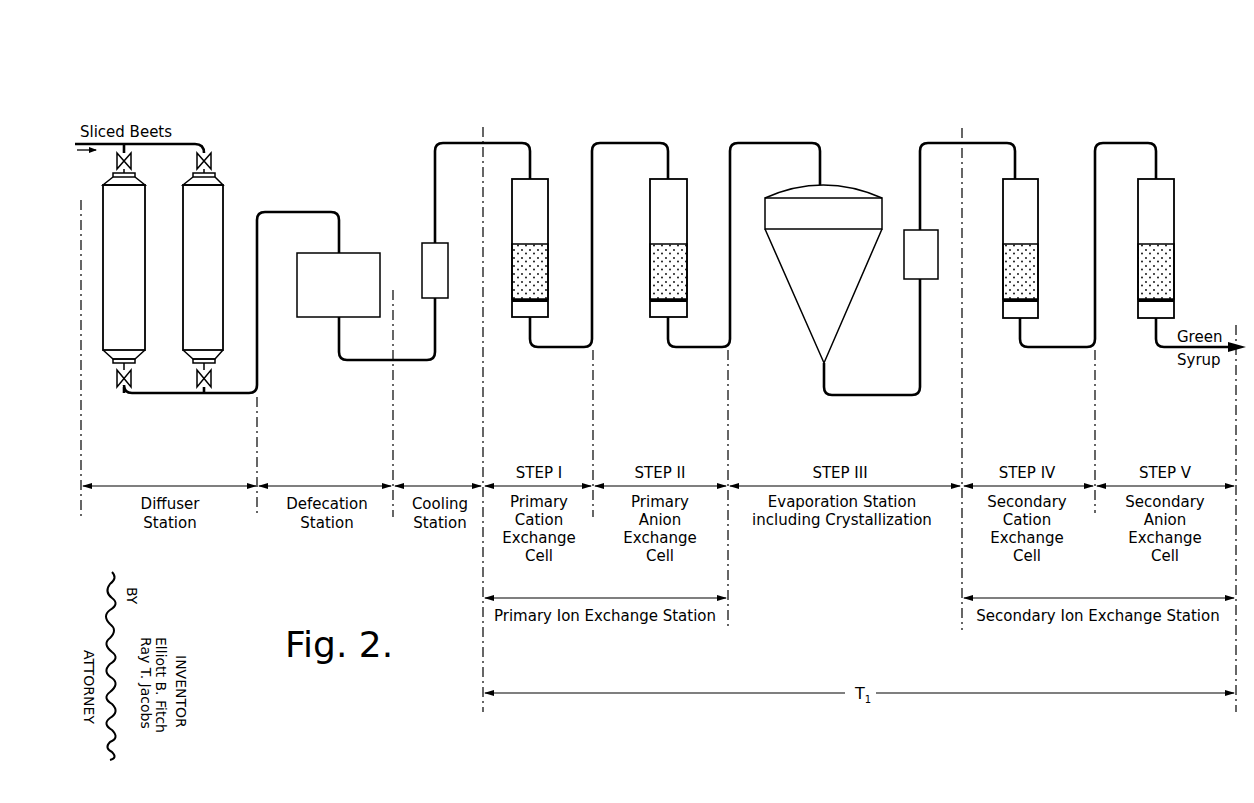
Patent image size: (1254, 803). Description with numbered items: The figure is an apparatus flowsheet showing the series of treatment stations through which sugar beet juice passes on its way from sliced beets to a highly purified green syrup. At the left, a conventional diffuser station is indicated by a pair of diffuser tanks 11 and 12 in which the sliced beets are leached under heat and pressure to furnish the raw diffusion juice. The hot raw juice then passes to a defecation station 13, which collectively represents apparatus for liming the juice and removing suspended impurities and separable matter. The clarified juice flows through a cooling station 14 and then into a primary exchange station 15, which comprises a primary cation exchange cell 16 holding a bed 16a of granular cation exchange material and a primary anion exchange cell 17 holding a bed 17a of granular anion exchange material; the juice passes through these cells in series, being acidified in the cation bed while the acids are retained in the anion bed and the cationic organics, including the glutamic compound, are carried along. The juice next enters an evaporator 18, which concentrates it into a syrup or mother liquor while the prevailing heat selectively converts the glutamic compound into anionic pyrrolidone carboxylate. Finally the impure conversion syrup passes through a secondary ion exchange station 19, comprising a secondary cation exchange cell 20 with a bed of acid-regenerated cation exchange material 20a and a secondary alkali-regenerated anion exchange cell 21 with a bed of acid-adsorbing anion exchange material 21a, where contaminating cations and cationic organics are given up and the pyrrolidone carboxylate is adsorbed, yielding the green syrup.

The diffuser tank 11 is at (104, 206).
The diffuser tank 12 is at (226, 212).
The defecation station 13 is at (355, 253).
The cooling station 14 is at (446, 243).
The primary exchange station 15 is at (700, 123).
The primary cation exchange cell 16 is at (551, 221).
The bed of granular cation exchange material 16a is at (540, 282).
The primary anion exchange cell 17 is at (689, 221).
The bed of granular anion exchange material 17a is at (678, 282).
The evaporator 18 is at (841, 184).
The secondary ion exchange station 19 is at (1190, 123).
The secondary cation exchange cell 20 is at (1041, 221).
The bed of granular acid-regenerated cation exchange material 20a is at (1031, 282).
The secondary alkali-regenerated anion exchange cell 21 is at (1177, 221).
The bed of granular acid-adsorbing anion exchange material 21a is at (1167, 282).